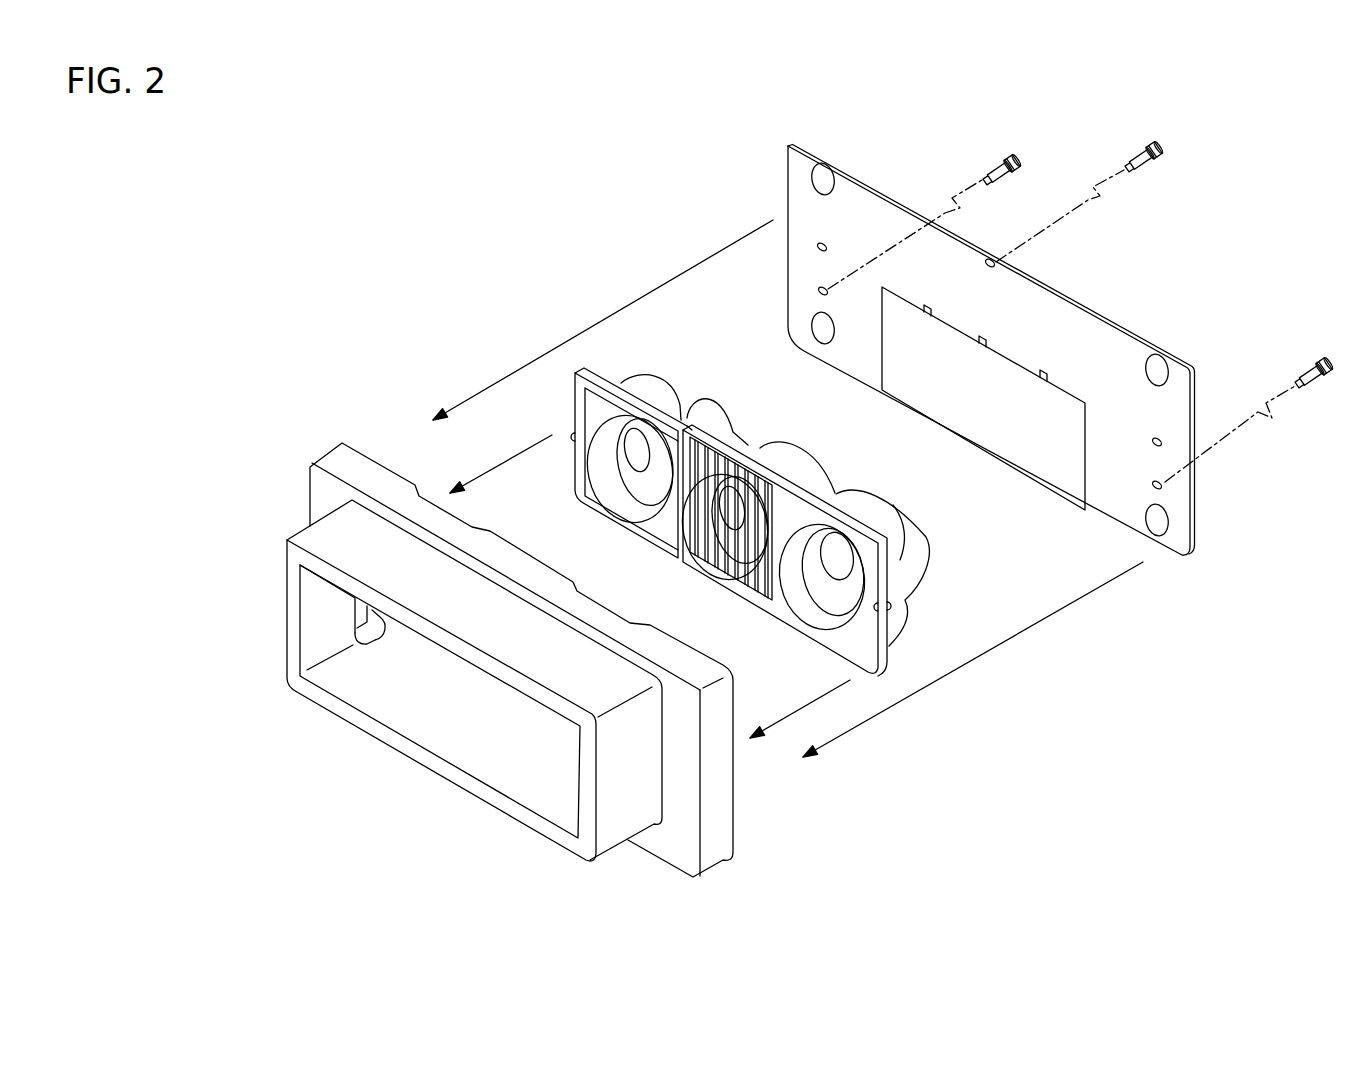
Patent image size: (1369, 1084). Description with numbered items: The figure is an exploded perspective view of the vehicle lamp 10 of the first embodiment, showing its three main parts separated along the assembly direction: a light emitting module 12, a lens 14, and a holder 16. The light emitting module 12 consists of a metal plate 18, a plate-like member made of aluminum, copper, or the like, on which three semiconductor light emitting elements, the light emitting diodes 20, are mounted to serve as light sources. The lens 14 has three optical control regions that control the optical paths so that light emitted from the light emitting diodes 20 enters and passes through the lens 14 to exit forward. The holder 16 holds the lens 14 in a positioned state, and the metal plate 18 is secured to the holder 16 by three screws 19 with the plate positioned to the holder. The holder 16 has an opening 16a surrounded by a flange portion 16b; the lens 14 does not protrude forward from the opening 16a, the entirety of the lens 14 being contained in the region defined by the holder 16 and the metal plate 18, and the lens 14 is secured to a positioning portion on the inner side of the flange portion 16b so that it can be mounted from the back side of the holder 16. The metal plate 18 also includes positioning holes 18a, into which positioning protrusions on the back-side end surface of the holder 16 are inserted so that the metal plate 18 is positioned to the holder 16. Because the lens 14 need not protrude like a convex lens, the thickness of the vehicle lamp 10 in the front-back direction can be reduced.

The vehicle lamp 10 is at (940, 914).
The light emitting module 12 is at (1218, 526).
The lens 14 is at (889, 646).
The holder 16 is at (736, 824).
The opening 16a is at (452, 722).
The flange portion 16b is at (288, 608).
The metal plate 18 is at (1153, 339).
The positioning holes 18a is at (818, 249).
The screws 19 is at (995, 160).
The light emitting diodes 20 is at (1045, 372).